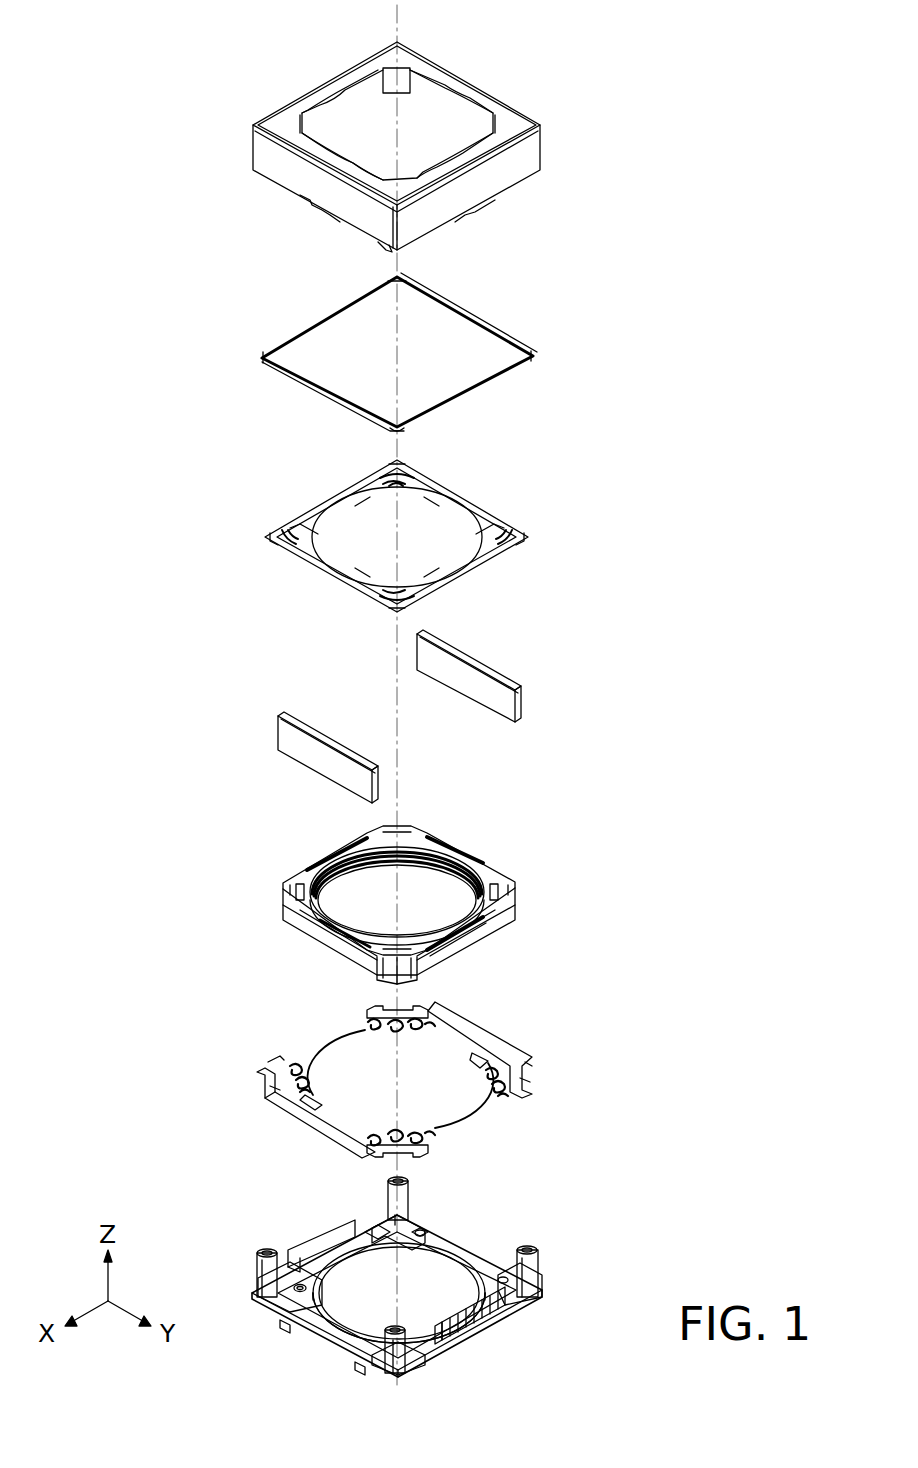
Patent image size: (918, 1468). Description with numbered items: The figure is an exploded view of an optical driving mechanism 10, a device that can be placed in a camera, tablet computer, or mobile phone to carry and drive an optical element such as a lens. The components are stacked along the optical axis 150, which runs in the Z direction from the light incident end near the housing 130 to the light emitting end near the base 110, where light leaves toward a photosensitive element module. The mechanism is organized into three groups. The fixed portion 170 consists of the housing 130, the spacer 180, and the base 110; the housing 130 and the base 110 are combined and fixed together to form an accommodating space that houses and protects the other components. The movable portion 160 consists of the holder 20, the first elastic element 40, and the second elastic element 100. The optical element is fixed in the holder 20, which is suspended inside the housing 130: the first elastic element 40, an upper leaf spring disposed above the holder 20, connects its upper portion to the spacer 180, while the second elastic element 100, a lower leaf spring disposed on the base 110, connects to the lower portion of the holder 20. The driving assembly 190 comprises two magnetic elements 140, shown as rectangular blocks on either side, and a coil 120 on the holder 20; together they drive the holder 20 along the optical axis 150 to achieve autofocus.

The optical driving mechanism 10 is at (112, 59).
The optical axis 150 is at (427, 695).
The housing 130 is at (522, 154).
The spacer 180 is at (535, 355).
The first elastic element 40 is at (530, 537).
The magnetic elements 140 is at (517, 708).
The holder 20 is at (516, 896).
The coil 120 is at (470, 938).
The second elastic element 100 is at (522, 1090).
The base 110 is at (544, 1292).
The fixed portion 170 is at (762, 85).
The movable portion 160 is at (762, 216).
The driving assembly 190 is at (762, 346).